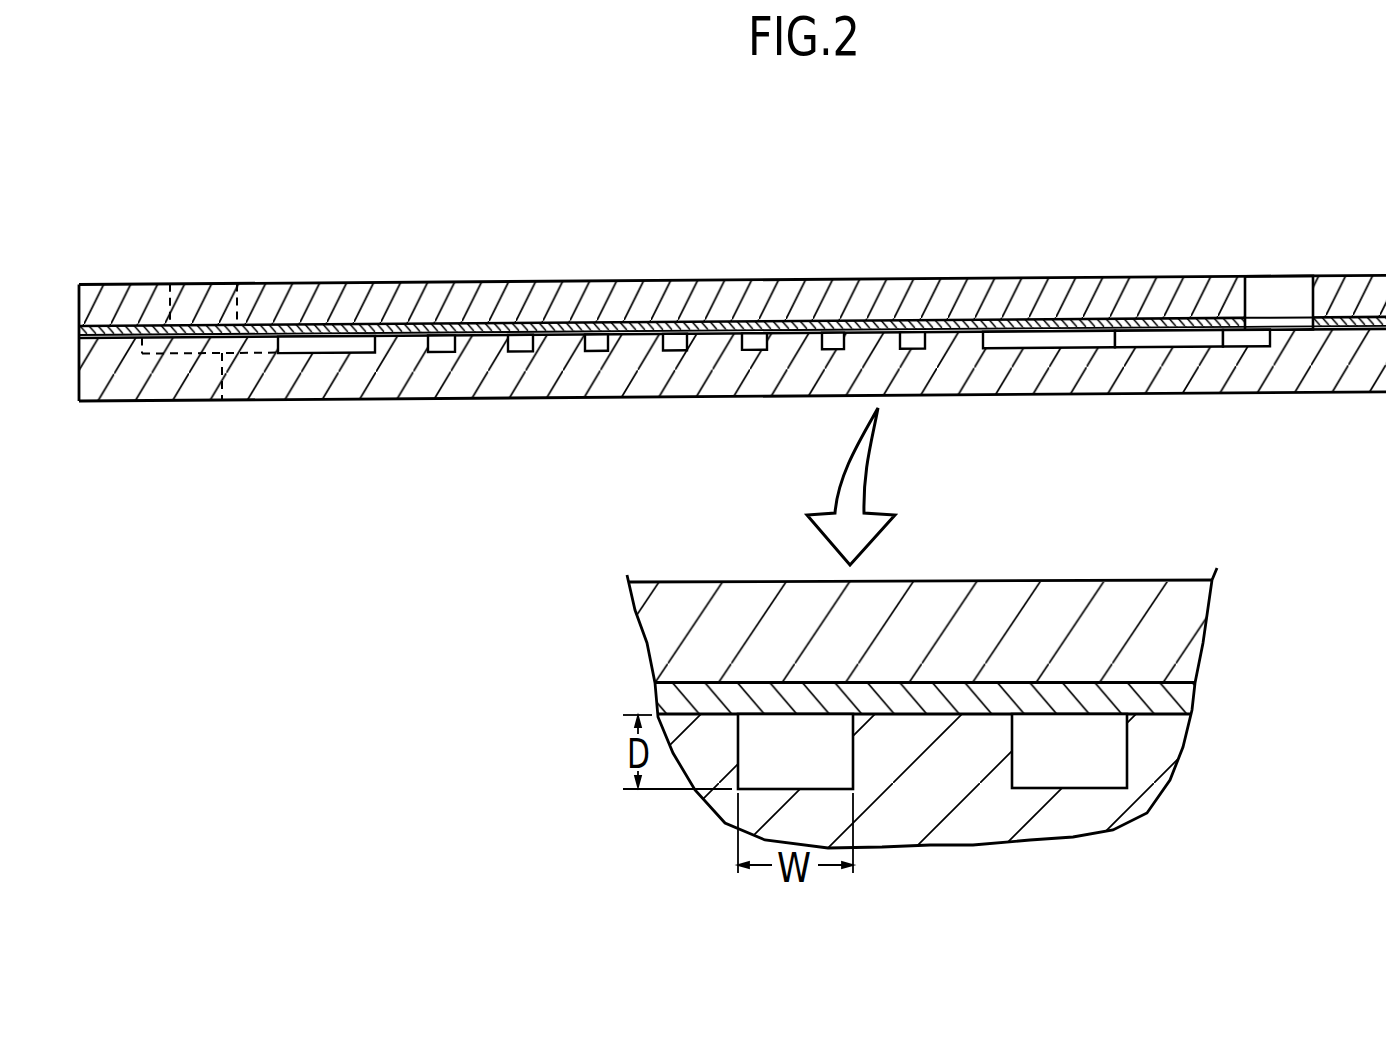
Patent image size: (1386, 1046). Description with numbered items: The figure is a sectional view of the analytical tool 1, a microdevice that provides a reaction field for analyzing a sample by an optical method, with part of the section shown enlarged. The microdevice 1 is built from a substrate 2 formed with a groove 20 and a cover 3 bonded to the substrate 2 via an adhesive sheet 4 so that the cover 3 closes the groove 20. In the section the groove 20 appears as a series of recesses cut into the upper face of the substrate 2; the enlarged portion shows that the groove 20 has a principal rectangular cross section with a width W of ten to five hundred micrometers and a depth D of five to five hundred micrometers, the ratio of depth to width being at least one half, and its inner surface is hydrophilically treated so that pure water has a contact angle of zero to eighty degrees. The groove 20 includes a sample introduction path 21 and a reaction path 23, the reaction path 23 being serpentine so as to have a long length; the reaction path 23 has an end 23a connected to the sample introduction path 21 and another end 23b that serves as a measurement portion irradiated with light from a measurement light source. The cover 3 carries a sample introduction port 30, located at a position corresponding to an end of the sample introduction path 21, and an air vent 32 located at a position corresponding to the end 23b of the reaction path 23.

The analytical tool 1 is at (452, 264).
The substrate 2 is at (623, 400).
The cover 3 is at (872, 277).
The adhesive sheet 4 is at (950, 325).
The groove 20 is at (703, 347).
The sample introduction path 21 is at (222, 400).
The reaction path 23 is at (599, 345).
The end of the reaction path 23a is at (297, 343).
The another end of the reaction path 23b is at (1172, 340).
The sample introduction port 30 is at (217, 283).
The air vent 32 is at (1247, 298).